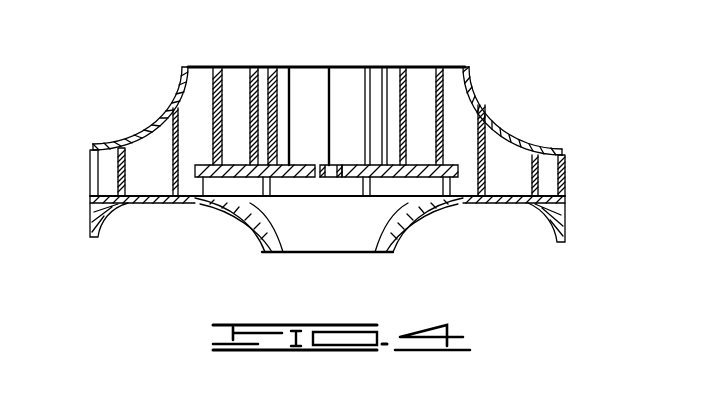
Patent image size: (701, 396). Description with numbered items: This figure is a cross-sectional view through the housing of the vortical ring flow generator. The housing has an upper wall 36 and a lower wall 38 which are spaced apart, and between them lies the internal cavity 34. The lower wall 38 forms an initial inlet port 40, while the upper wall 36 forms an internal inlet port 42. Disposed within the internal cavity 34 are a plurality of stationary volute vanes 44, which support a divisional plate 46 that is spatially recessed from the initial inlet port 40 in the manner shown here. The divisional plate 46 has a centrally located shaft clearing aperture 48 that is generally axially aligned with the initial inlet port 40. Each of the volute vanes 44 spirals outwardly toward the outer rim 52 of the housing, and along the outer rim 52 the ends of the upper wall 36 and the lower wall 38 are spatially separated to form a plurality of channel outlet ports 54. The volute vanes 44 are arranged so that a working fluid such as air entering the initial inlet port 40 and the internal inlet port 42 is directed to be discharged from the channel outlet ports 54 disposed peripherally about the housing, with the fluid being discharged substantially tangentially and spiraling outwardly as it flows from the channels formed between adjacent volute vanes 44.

The internal cavity 34 is at (150, 159).
The upper wall 36 is at (478, 103).
The lower wall 38 is at (485, 205).
The initial inlet port 40 is at (358, 236).
The internal inlet port 42 is at (412, 68).
The stationary volute vanes 44 is at (389, 78).
The divisional plate 46 is at (287, 180).
The shaft clearing aperture 48 is at (337, 170).
The outer rim 52 is at (91, 149).
The channel outlet ports 54 is at (98, 176).